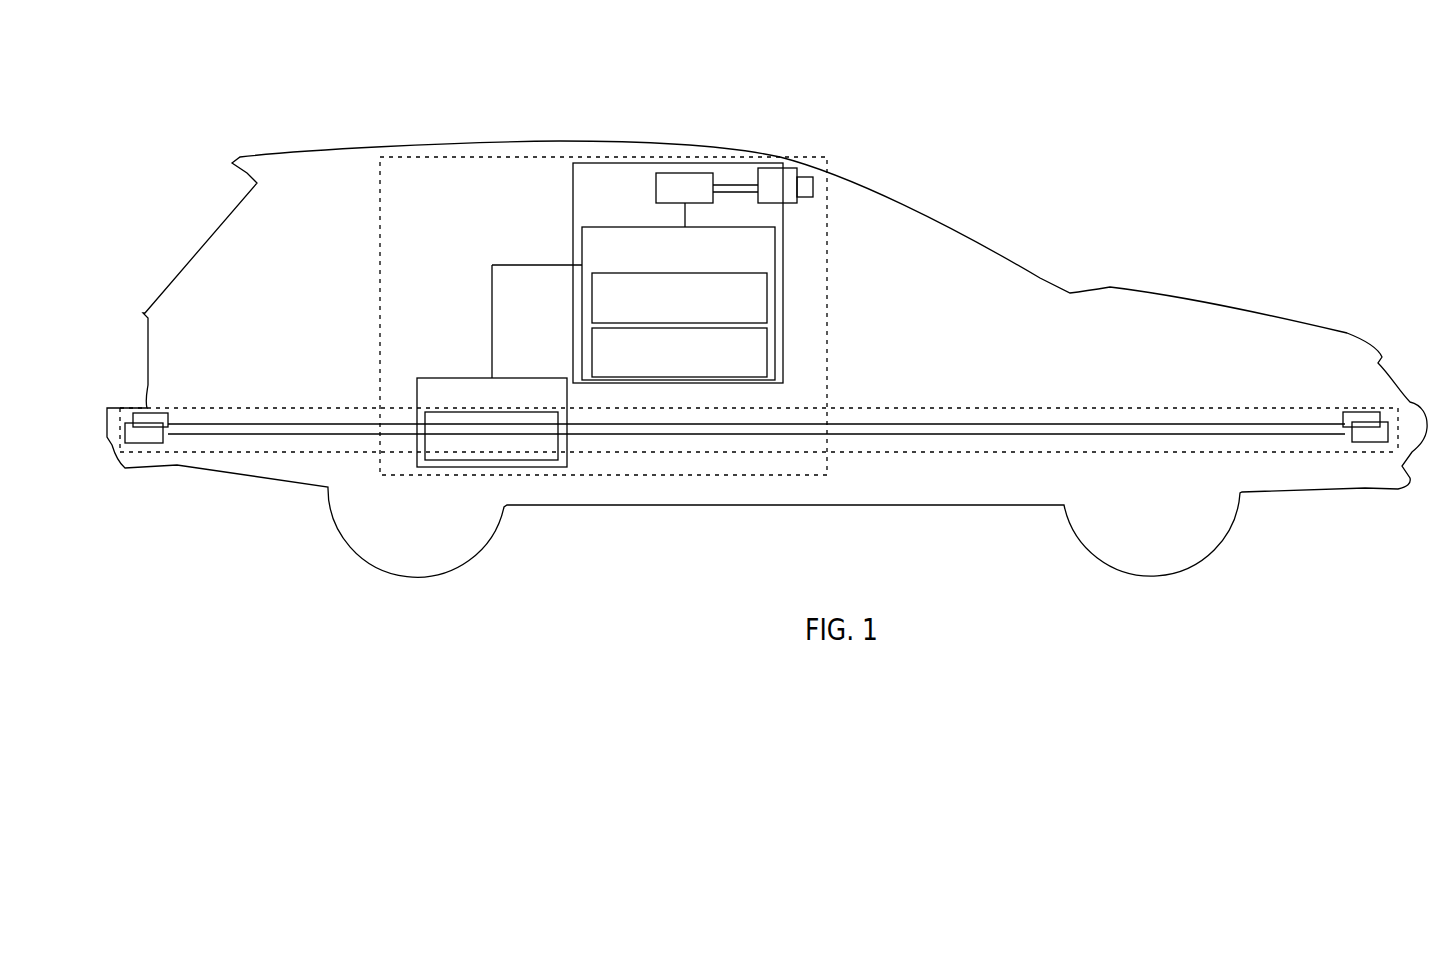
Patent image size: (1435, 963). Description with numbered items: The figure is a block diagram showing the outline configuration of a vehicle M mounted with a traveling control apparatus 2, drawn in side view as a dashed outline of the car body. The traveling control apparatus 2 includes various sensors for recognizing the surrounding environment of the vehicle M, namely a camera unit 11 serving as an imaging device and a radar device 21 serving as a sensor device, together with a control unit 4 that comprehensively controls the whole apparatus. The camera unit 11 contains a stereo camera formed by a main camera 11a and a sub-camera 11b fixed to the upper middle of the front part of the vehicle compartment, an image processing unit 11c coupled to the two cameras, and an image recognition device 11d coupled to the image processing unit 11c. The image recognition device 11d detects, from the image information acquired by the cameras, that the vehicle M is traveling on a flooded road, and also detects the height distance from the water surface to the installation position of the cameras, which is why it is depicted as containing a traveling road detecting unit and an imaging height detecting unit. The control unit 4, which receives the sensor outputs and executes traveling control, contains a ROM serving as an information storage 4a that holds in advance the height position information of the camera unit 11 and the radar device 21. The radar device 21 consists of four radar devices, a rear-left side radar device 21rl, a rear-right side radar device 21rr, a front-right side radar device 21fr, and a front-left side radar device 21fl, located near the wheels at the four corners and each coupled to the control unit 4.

The vehicle M is at (580, 95).
The traveling control apparatus 2 is at (380, 353).
The control unit 4 is at (438, 377).
The information storage 4a is at (424, 421).
The camera unit 11 is at (574, 222).
The main camera 11a is at (800, 204).
The sub-camera 11b is at (812, 199).
The image processing unit (IPU) 11c is at (656, 182).
The image recognition device 11d is at (652, 227).
The radar device 21 is at (756, 388).
The rear-left side radar device 21rl is at (152, 422).
The rear-right side radar device 21rr is at (176, 414).
The front-right side radar device 21fr is at (1340, 413).
The front-left side radar device 21fl is at (1354, 421).